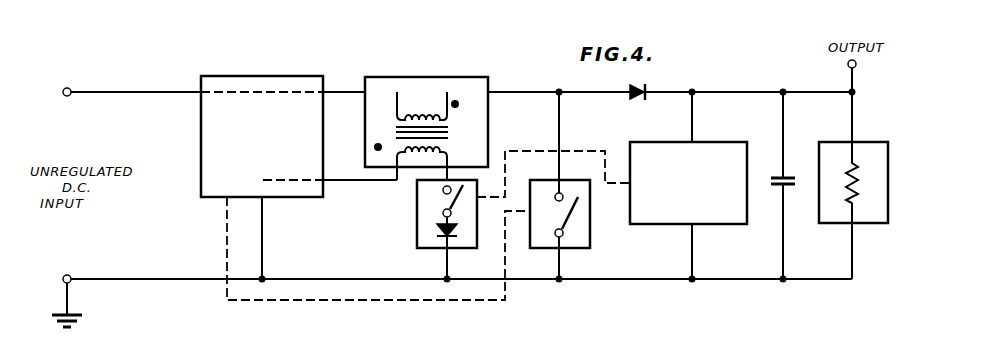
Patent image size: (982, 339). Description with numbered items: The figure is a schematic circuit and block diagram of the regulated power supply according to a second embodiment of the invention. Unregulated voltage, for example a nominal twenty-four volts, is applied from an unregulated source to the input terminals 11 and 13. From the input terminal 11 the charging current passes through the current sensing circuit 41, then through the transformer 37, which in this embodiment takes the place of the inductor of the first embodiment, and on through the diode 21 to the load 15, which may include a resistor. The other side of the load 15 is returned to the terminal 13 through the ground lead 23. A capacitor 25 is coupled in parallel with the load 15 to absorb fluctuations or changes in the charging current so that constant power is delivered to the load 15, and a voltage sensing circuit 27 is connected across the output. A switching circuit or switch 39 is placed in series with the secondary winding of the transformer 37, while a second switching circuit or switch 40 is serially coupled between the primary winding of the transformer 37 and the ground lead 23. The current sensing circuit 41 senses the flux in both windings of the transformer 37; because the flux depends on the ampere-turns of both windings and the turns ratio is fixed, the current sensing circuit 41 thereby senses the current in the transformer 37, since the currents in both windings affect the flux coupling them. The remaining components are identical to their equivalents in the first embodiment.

The input terminal 11 is at (70, 87).
The input terminal 13 is at (68, 275).
The load 15 is at (833, 223).
The diode 21 is at (628, 97).
The ground lead 23 is at (147, 278).
The capacitor 25 is at (773, 188).
The voltage sensing circuit 27 is at (645, 221).
The transformer 37 is at (452, 77).
The switching circuit or switch 39 is at (417, 230).
The switching circuit or switch 40 is at (544, 248).
The current sensing circuit 41 is at (293, 73).